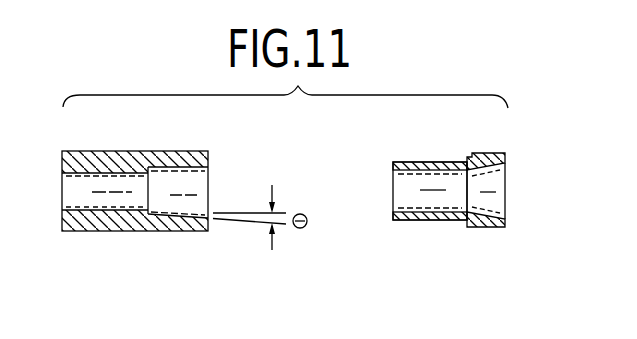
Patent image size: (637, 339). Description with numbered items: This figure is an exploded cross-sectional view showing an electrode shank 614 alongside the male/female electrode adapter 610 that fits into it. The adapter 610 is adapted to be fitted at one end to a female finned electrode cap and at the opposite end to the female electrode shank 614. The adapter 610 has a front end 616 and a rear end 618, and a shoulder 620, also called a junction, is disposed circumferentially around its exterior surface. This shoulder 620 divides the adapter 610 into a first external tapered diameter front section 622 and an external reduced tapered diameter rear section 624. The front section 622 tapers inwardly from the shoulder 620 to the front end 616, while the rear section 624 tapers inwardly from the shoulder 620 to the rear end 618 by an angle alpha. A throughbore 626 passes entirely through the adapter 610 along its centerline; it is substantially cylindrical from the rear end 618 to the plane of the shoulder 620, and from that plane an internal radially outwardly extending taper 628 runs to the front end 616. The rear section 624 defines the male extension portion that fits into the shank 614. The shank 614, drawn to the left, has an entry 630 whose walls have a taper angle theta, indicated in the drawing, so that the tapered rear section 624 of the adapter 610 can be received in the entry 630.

The male/female electrode adapter 610 is at (451, 194).
The electrode shank 614 is at (145, 231).
The front end 616 is at (500, 153).
The rear end 618 is at (392, 217).
The shoulder 620 is at (469, 156).
The front section 622 is at (483, 153).
The rear section 624 is at (425, 221).
The throughbore 626 is at (392, 178).
The internal taper 628 is at (506, 183).
The entry 630 is at (208, 162).